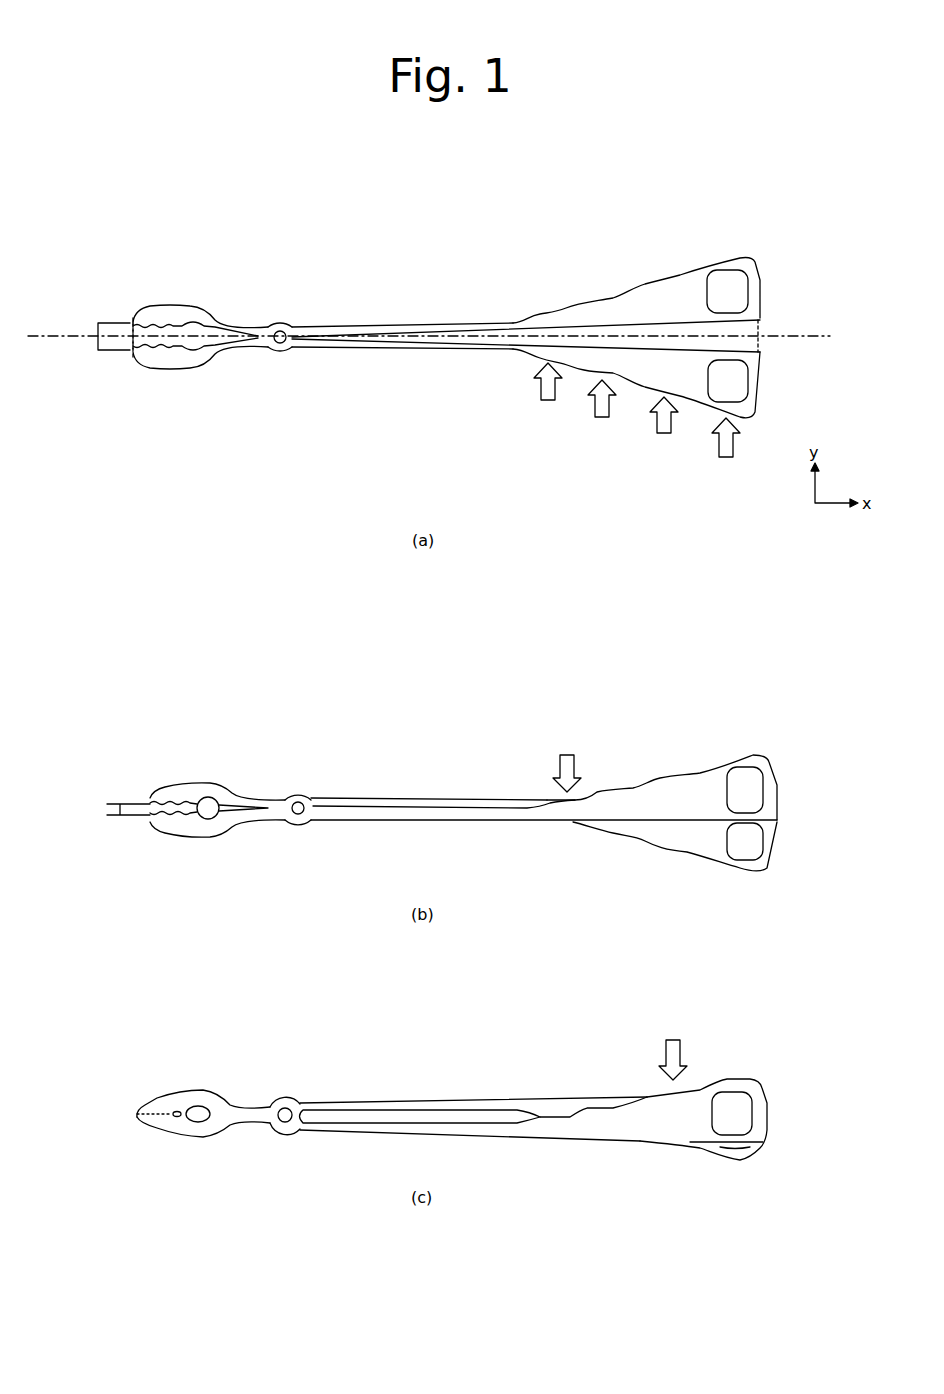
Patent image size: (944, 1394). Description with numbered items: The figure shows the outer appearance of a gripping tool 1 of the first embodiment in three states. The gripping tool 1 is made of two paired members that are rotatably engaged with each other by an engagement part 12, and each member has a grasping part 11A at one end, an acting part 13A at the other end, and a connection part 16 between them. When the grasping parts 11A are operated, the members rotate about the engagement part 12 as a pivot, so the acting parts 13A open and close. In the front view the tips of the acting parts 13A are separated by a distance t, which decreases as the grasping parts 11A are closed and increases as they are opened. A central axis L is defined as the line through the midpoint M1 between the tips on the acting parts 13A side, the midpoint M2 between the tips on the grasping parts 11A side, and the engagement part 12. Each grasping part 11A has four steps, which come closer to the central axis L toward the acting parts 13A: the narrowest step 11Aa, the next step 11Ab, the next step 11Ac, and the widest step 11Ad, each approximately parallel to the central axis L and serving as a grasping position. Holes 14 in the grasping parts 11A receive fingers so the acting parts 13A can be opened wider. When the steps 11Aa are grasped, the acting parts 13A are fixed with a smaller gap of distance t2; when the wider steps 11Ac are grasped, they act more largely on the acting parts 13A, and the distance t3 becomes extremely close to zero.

The gripping tool 1 is at (157, 130).
The grasping part 11A is at (760, 219).
The step 11Aa is at (561, 577).
The step 11Ab is at (603, 411).
The step 11Ac is at (672, 738).
The step 11Ad is at (728, 450).
The engagement part 12 is at (275, 347).
The acting part 13A is at (215, 219).
The hole 14 is at (735, 290).
The connection part 16 is at (513, 219).
The midpoint M1 is at (133, 332).
The midpoint M2 is at (758, 335).
The central axis L is at (437, 339).
The distance t is at (97, 330).
The distance t2 is at (116, 807).
The distance t3 is at (137, 1114).